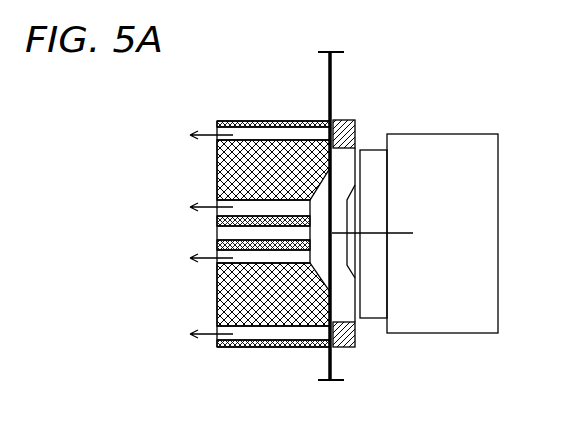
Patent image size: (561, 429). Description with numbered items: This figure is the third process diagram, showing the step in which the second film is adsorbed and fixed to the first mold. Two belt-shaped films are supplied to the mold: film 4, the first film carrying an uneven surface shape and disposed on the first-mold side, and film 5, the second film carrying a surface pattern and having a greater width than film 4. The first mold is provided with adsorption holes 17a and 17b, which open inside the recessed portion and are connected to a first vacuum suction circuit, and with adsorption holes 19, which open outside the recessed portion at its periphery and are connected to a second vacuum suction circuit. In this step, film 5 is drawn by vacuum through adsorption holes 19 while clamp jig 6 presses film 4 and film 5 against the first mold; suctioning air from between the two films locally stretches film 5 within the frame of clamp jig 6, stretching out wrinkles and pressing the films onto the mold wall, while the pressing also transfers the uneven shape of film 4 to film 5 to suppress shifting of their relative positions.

The film 4 is at (327, 78).
The film 5 is at (333, 92).
The clamp jig 6 is at (357, 133).
The adsorption hole 17a is at (263, 258).
The adsorption hole 17b is at (263, 207).
The adsorption holes 19 is at (258, 135).